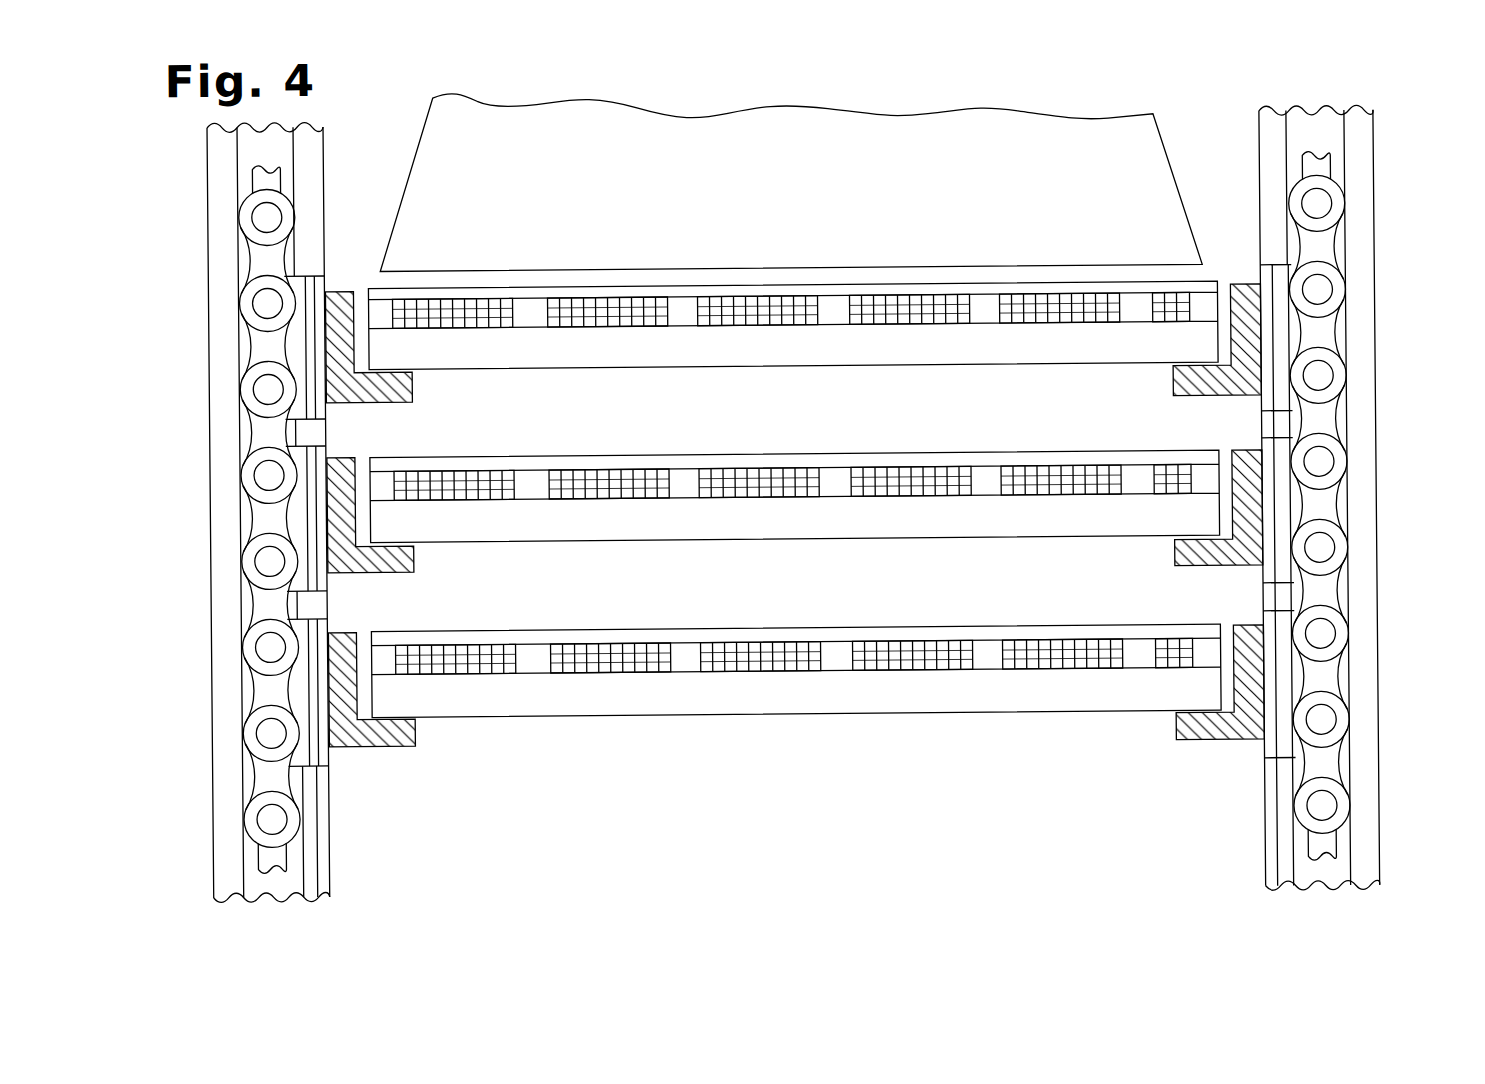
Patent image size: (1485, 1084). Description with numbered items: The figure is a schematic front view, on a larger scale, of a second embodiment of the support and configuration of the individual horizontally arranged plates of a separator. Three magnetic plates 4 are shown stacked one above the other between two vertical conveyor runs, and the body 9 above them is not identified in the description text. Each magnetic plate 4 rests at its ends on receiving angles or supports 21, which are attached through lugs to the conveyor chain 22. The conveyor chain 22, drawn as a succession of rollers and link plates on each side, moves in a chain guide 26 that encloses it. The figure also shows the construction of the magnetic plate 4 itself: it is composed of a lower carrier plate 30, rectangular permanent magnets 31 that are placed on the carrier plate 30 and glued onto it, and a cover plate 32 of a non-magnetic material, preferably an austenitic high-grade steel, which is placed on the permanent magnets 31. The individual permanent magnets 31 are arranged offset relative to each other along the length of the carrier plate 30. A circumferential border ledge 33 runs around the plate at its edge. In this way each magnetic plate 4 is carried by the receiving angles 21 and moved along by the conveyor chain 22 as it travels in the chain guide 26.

The magnetic plate 4 is at (795, 548).
The workpiece 9 is at (1018, 150).
The receiving angle 21 is at (1228, 734).
The conveyor chain 22 is at (1317, 428).
The chain guide 26 is at (1357, 252).
The carrier plate 30 is at (683, 699).
The permanent magnet 31 is at (591, 655).
The cover plate 32 is at (481, 640).
The circumferential border ledge 33 is at (1196, 666).